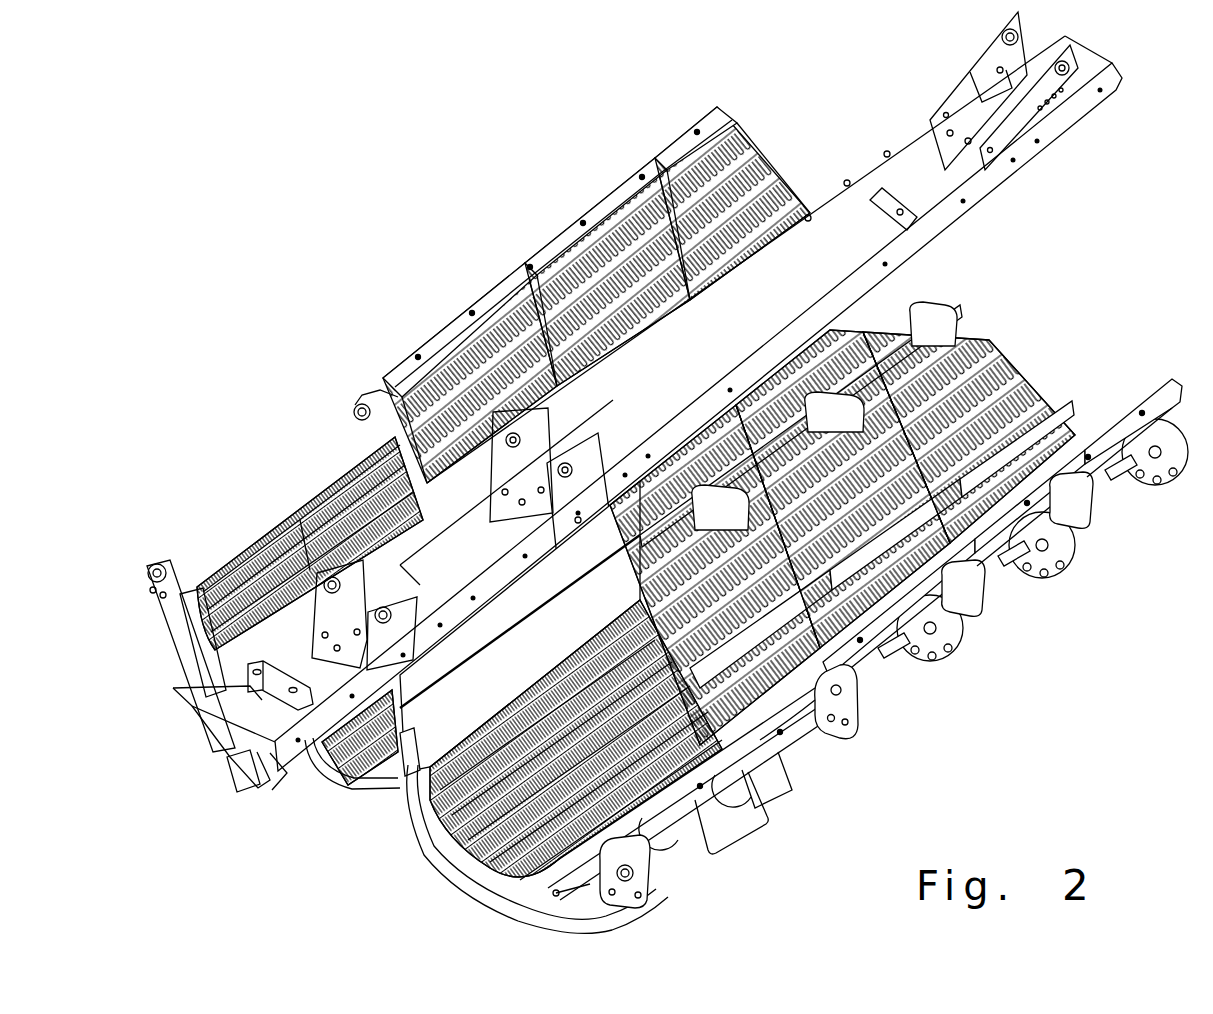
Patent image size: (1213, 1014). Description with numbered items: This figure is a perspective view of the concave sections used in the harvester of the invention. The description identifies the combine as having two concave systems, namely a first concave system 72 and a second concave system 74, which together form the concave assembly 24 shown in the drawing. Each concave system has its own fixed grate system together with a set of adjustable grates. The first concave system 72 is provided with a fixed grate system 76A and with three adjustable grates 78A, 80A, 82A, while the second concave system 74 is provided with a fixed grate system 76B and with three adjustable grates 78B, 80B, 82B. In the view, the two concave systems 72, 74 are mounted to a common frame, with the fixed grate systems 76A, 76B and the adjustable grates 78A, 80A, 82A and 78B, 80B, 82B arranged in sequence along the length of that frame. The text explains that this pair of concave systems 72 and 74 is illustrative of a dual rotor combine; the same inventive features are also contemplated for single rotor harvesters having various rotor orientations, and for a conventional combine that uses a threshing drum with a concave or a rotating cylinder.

The concave assembly 24 is at (226, 840).
The concave system 72 is at (453, 862).
The concave system 74 is at (178, 708).
The fixed grate system 76A is at (727, 837).
The fixed grate system 76B is at (278, 498).
The adjustable grate 78A is at (884, 717).
The adjustable grate 78B is at (430, 325).
The adjustable grate 80A is at (992, 620).
The adjustable grate 80B is at (545, 230).
The adjustable grate 82A is at (1102, 528).
The adjustable grate 82B is at (656, 131).